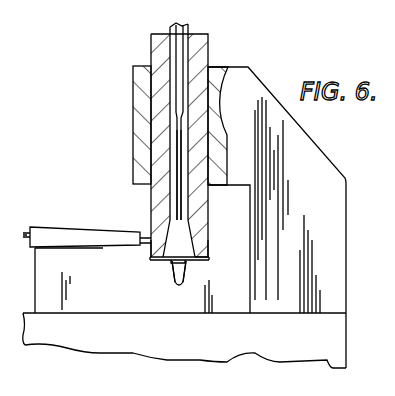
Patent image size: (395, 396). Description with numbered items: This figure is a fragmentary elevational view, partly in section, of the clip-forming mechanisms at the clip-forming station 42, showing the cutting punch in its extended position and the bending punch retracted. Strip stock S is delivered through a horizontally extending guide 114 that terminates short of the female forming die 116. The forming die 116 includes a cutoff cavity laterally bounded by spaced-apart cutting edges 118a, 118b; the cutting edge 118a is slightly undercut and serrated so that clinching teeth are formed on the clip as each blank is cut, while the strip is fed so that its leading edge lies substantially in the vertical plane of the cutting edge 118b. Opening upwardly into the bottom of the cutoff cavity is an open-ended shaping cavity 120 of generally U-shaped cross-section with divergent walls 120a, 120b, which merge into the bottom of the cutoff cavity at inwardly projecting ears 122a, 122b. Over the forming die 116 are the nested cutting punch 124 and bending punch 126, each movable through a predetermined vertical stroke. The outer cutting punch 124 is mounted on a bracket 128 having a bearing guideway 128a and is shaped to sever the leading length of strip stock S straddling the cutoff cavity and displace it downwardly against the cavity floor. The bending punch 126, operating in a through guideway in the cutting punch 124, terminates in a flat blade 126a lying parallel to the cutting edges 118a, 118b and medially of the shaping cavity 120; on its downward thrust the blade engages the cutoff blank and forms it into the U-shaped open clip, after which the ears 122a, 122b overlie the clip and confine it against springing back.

The clip-forming station 42 is at (73, 172).
The guide 114 is at (55, 230).
The forming die 116 is at (93, 302).
The cutting edge 118a is at (150, 250).
The cutting edge 118b is at (212, 247).
The shaping cavity 120 is at (180, 286).
The divergent wall 120a is at (172, 270).
The divergent wall 120b is at (187, 275).
The inwardly projecting ear 122a is at (160, 262).
The inwardly projecting ear 122b is at (206, 260).
The cutting punch 124 is at (203, 60).
The bending punch 126 is at (180, 52).
The flat blade 126a is at (178, 165).
The bracket 128 is at (312, 150).
The bearing guideway 128a is at (145, 90).
The strip stock S is at (26, 232).